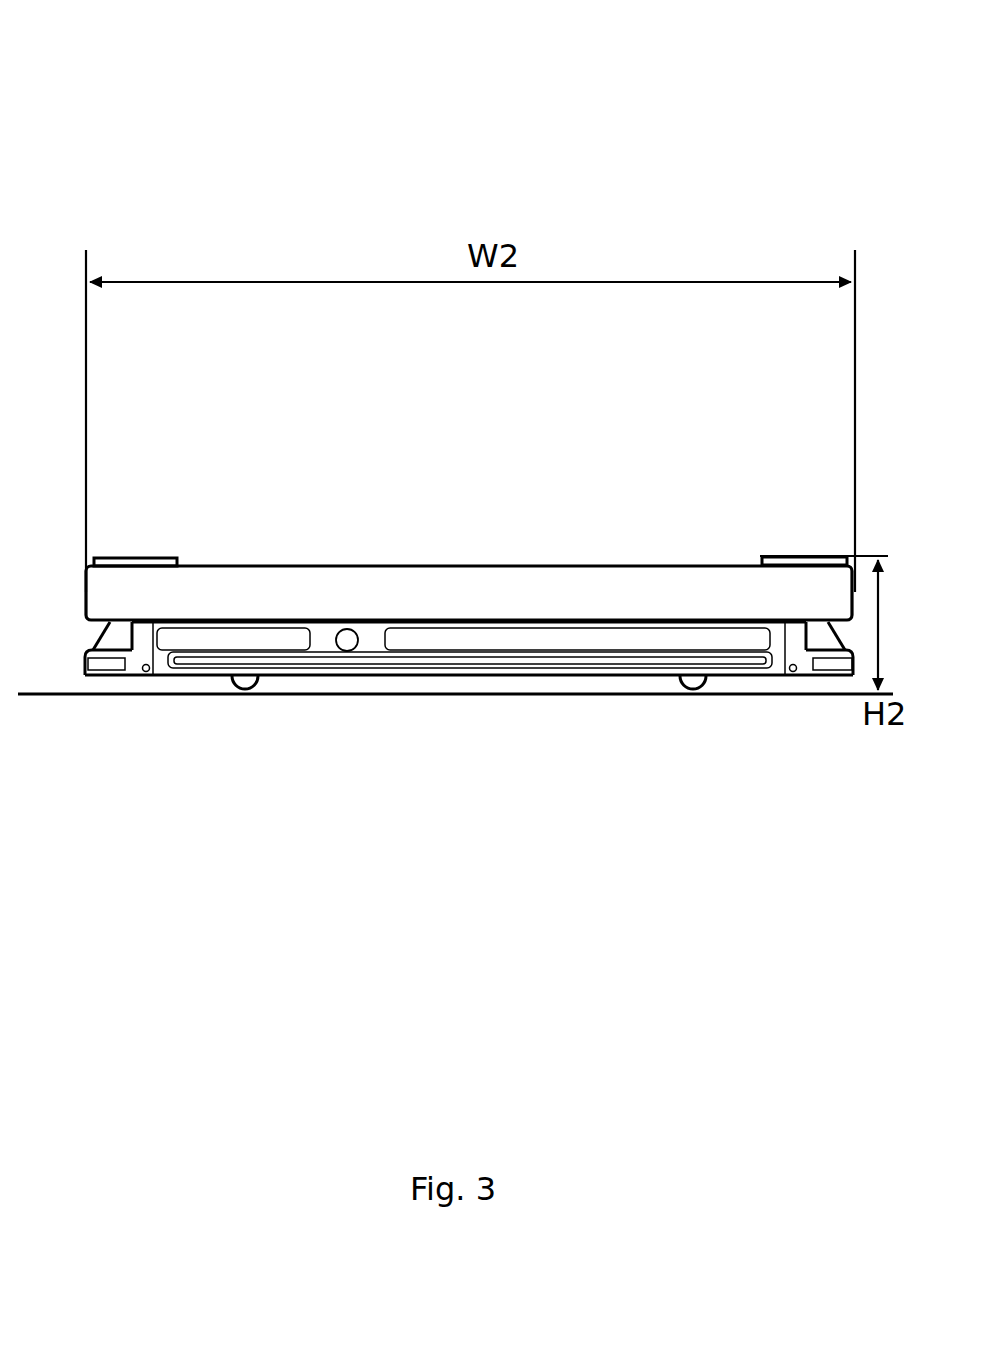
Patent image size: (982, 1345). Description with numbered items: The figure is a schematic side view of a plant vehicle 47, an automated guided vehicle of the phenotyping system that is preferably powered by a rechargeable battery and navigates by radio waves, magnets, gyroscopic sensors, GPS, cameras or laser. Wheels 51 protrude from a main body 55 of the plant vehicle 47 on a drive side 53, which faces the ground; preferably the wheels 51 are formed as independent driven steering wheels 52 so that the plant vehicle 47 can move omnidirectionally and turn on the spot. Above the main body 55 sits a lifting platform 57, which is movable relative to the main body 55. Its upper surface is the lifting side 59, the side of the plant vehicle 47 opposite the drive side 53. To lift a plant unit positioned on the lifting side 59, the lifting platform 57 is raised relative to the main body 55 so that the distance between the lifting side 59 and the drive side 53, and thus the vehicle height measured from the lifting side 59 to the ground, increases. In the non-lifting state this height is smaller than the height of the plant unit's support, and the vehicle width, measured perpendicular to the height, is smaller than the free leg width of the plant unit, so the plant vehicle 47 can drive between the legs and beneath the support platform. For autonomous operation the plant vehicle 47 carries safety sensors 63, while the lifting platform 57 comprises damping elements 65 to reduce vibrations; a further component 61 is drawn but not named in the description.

The plant vehicle 47 is at (288, 190).
The wheels 51 is at (600, 755).
The independent driven steering wheels 52 is at (709, 698).
The drive side 53 is at (758, 728).
The main body 55 is at (134, 687).
The lifting platform 57 is at (491, 588).
The lifting side 59 is at (292, 498).
The sensor 61 is at (348, 657).
The safety sensors 63 is at (90, 674).
The damping elements 65 is at (125, 556).